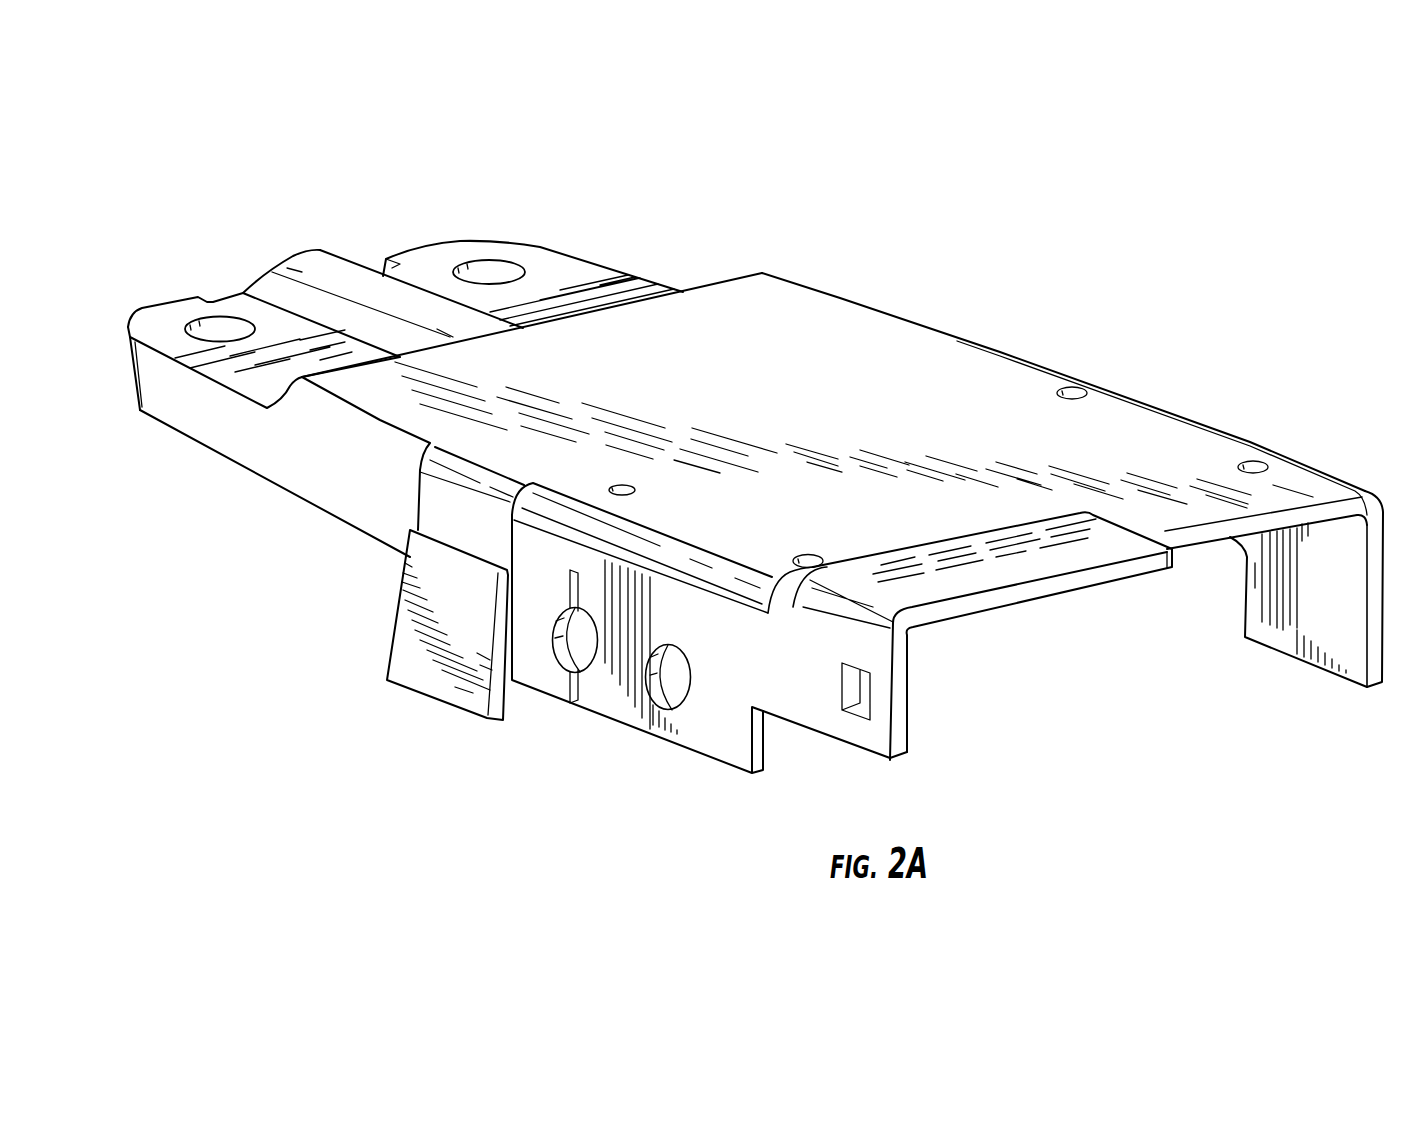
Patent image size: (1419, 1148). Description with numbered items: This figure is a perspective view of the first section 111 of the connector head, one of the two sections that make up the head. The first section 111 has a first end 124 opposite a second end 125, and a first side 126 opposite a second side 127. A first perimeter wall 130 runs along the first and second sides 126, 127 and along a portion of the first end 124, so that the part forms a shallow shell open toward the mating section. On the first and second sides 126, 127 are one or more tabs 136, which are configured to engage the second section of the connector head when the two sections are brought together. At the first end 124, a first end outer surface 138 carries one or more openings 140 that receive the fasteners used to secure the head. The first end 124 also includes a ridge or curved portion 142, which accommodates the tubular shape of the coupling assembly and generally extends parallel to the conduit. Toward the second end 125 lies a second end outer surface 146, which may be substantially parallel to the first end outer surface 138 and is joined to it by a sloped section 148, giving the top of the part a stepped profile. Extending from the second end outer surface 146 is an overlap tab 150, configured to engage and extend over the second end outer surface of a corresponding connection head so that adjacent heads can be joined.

The first section 111 is at (840, 216).
The first end 124 is at (131, 457).
The second end 125 is at (1391, 697).
The first side 126 is at (639, 757).
The second side 127 is at (1162, 410).
The first perimeter wall 130 is at (355, 530).
The tab 136 is at (445, 698).
The first end outer surface 138 is at (585, 287).
The opening 140 is at (487, 268).
The curved portion 142 is at (343, 275).
The second end outer surface 146 is at (1023, 435).
The sloped section 148 is at (720, 288).
The overlap tab 150 is at (1027, 593).